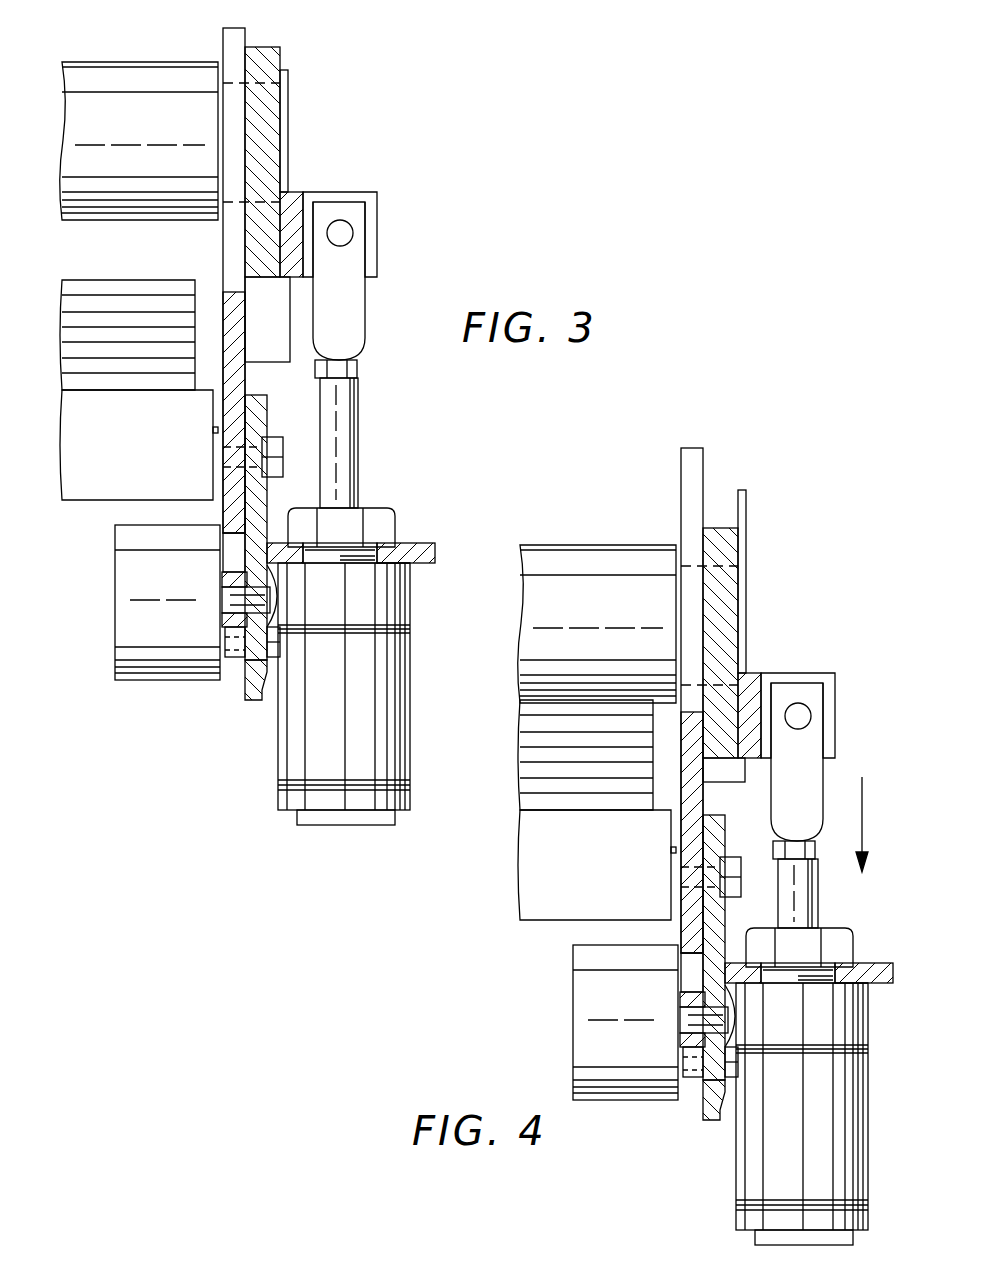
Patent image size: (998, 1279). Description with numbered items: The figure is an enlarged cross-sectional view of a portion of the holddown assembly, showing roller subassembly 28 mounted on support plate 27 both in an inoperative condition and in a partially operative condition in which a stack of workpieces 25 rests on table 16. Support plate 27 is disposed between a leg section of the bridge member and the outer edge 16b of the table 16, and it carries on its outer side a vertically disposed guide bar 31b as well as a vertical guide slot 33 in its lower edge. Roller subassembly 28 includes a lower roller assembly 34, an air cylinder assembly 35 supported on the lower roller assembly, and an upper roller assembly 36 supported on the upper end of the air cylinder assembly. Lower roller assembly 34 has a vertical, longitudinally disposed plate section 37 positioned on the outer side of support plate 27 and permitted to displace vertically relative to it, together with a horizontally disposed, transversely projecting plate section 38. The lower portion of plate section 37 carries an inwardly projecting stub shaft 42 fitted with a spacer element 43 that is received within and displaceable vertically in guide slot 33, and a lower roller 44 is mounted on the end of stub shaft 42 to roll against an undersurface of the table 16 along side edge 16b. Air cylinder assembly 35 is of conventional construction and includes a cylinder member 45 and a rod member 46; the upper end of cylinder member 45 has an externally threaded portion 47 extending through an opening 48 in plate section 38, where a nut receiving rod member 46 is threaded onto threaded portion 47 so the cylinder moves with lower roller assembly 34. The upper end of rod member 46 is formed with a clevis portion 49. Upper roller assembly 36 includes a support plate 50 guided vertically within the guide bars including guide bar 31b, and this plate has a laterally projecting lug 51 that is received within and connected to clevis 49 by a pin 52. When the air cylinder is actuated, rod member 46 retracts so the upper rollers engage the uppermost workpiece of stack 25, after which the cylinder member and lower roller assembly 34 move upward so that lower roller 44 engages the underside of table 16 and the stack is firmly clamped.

In FIG. 3, the table 16 is at (64, 458).
In FIG. 4, the table 16 is at (526, 886).
In FIG. 3, the outer edge of table 16b is at (216, 431).
In FIG. 4, the outer edge of table 16b is at (678, 860).
In FIG. 3, the stack of workpieces 25 is at (57, 346).
In FIG. 4, the stack of workpieces 25 is at (510, 768).
In FIG. 3, the support plate 27 is at (246, 34).
In FIG. 4, the support plate 27 is at (703, 465).
In FIG. 3, the roller subassembly 28 is at (372, 467).
In FIG. 4, the roller subassembly 28 is at (780, 662).
In FIG. 3, the guide bar 31b is at (288, 122).
In FIG. 4, the guide bar 31b is at (746, 520).
In FIG. 3, the guide slot 33 is at (226, 551).
In FIG. 4, the guide slot 33 is at (690, 968).
In FIG. 3, the lower roller assembly 34 is at (438, 547).
In FIG. 4, the lower roller assembly 34 is at (868, 966).
In FIG. 3, the air cylinder assembly 35 is at (410, 660).
In FIG. 4, the air cylinder assembly 35 is at (873, 1120).
In FIG. 3, the upper roller assembly 36 is at (288, 165).
In FIG. 4, the upper roller assembly 36 is at (746, 583).
In FIG. 3, the vertical plate section 37 is at (250, 696).
In FIG. 4, the vertical plate section 37 is at (701, 1100).
In FIG. 3, the horizontal plate section 38 is at (388, 542).
In FIG. 4, the horizontal plate section 38 is at (799, 947).
In FIG. 3, the stub shaft 42 is at (276, 615).
In FIG. 4, the stub shaft 42 is at (741, 1015).
In FIG. 3, the spacer element 43 is at (224, 612).
In FIG. 4, the spacer element 43 is at (682, 1002).
In FIG. 3, the lower roller 44 is at (137, 666).
In FIG. 4, the lower roller 44 is at (580, 1003).
In FIG. 3, the cylinder member 45 is at (398, 715).
In FIG. 4, the cylinder member 45 is at (869, 1168).
In FIG. 3, the rod member 46 is at (352, 403).
In FIG. 4, the rod member 46 is at (821, 907).
In FIG. 3, the externally threaded portion 47 is at (340, 565).
In FIG. 4, the externally threaded portion 47 is at (803, 986).
In FIG. 3, the opening 48 is at (380, 566).
In FIG. 4, the opening 48 is at (845, 984).
In FIG. 3, the clevis portion 49 is at (352, 323).
In FIG. 4, the clevis portion 49 is at (826, 780).
In FIG. 3, the support plate 50 is at (282, 185).
In FIG. 4, the support plate 50 is at (742, 613).
In FIG. 3, the laterally projecting lug 51 is at (378, 258).
In FIG. 4, the laterally projecting lug 51 is at (836, 738).
In FIG. 3, the pin 52 is at (158, 131).
In FIG. 4, the pin 52 is at (613, 615).